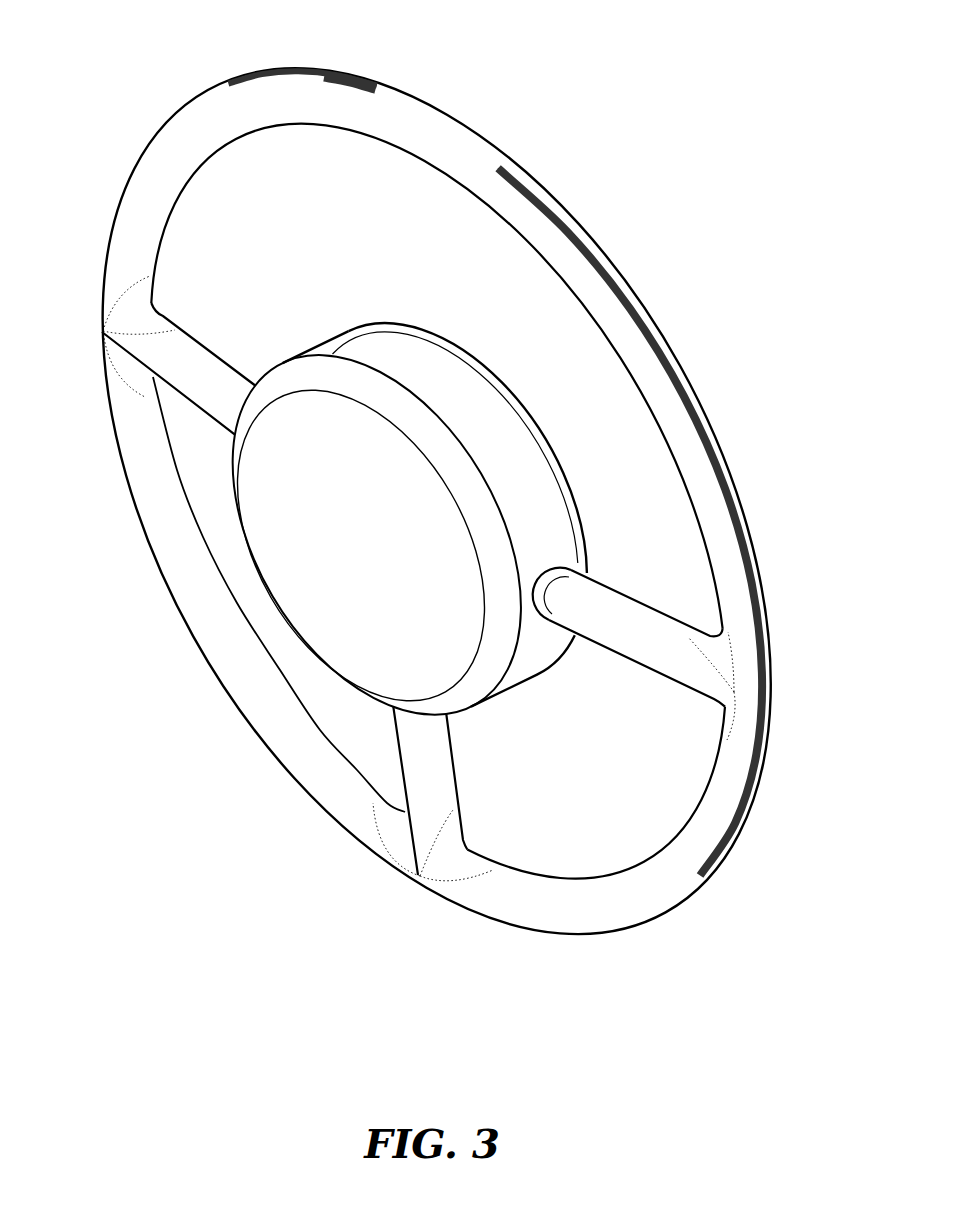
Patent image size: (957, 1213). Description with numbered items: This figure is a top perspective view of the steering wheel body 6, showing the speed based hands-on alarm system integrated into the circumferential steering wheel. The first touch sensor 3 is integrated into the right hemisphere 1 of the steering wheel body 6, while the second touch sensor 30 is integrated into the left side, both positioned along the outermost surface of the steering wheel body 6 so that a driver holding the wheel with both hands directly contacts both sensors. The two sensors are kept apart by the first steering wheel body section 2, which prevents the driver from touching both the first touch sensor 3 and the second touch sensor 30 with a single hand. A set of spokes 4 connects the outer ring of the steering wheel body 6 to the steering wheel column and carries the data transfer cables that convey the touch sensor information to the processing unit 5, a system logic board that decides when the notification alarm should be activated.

The right hemisphere 1 is at (538, 910).
The first steering wheel body section 2 is at (446, 118).
The first touch sensor 3 is at (525, 172).
The set of spokes 4 is at (196, 368).
The processing unit 5 is at (434, 372).
The steering wheel body 6 is at (454, 524).
The second touch sensor 30 is at (355, 74).